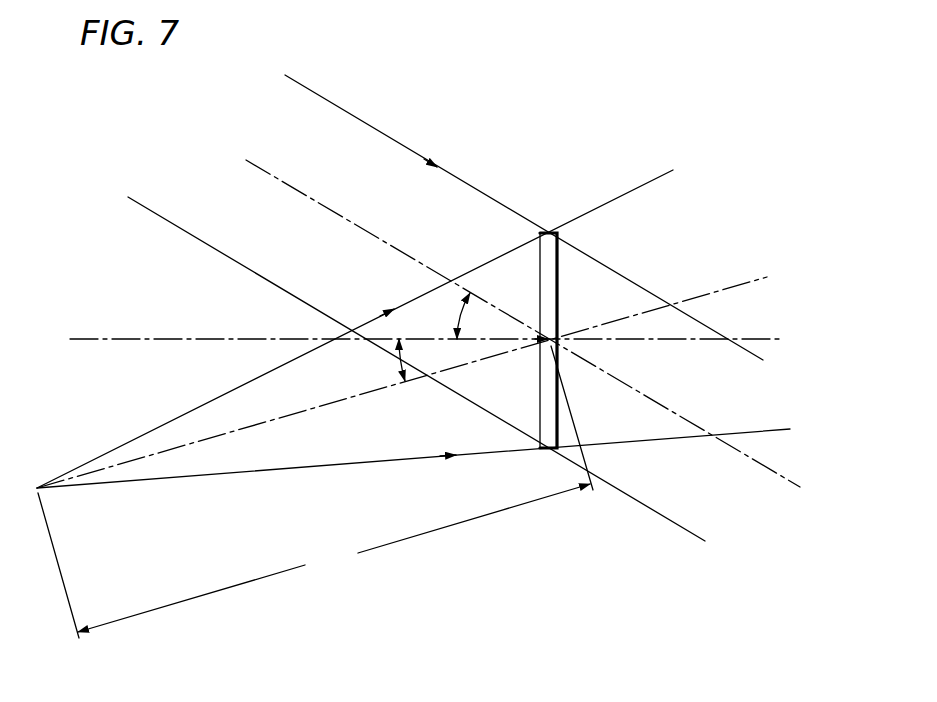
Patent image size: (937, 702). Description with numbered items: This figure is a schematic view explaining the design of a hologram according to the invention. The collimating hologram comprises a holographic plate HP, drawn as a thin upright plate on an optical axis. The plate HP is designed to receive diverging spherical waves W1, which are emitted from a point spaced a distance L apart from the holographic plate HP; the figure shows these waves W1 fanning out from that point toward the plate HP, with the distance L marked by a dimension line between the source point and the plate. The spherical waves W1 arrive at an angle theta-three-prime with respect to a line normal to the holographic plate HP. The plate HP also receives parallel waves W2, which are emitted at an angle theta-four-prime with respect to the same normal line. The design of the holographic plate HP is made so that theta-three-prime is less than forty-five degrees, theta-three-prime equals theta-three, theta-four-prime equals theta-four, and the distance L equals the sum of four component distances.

The diverging spherical waves W1 is at (128, 438).
The parallel waves W2 is at (389, 132).
The holographic plate HP is at (553, 265).
The distance L is at (315, 492).